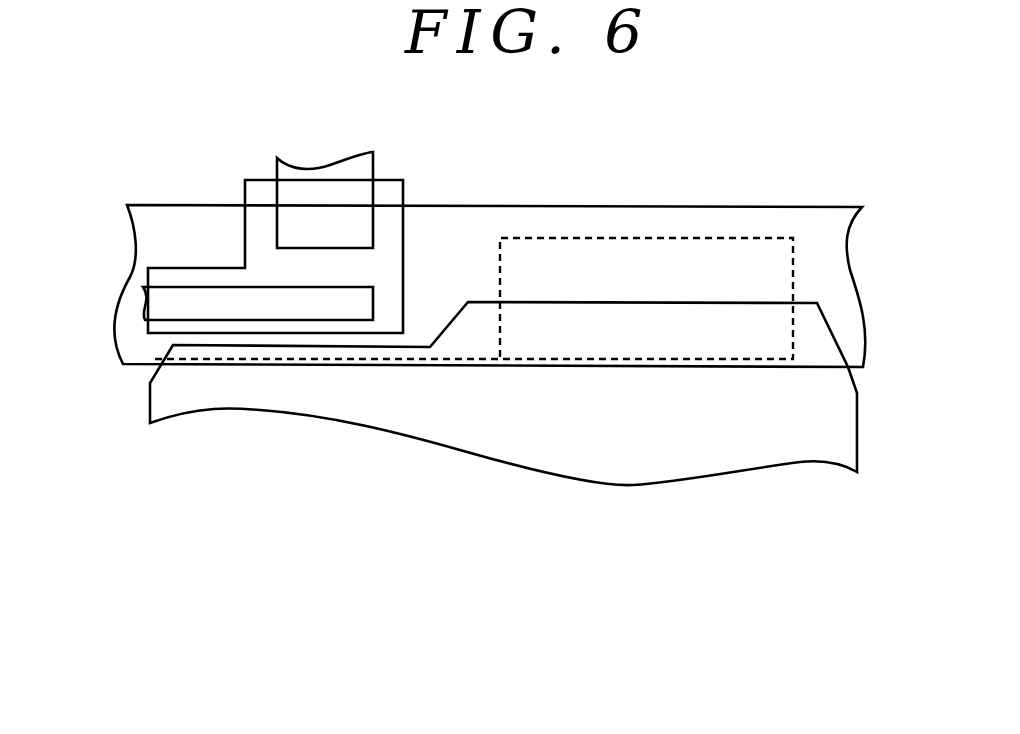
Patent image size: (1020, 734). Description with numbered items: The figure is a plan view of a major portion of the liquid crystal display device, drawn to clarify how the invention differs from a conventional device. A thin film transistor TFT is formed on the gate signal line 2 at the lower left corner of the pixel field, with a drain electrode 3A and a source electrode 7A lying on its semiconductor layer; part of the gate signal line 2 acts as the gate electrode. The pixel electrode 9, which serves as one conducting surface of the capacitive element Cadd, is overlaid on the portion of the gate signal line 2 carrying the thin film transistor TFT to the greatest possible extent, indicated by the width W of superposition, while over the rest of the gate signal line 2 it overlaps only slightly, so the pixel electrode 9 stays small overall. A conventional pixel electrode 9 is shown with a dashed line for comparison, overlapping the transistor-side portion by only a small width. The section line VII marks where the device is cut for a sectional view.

The gate signal line 2 is at (833, 270).
The pixel electrode 9 is at (858, 417).
The source electrode 7A is at (277, 230).
The drain electrode 3A is at (143, 300).
The thin film transistor TFT is at (386, 263).
The width of superposition W is at (213, 312).
The section line VII- VII is at (350, 343).